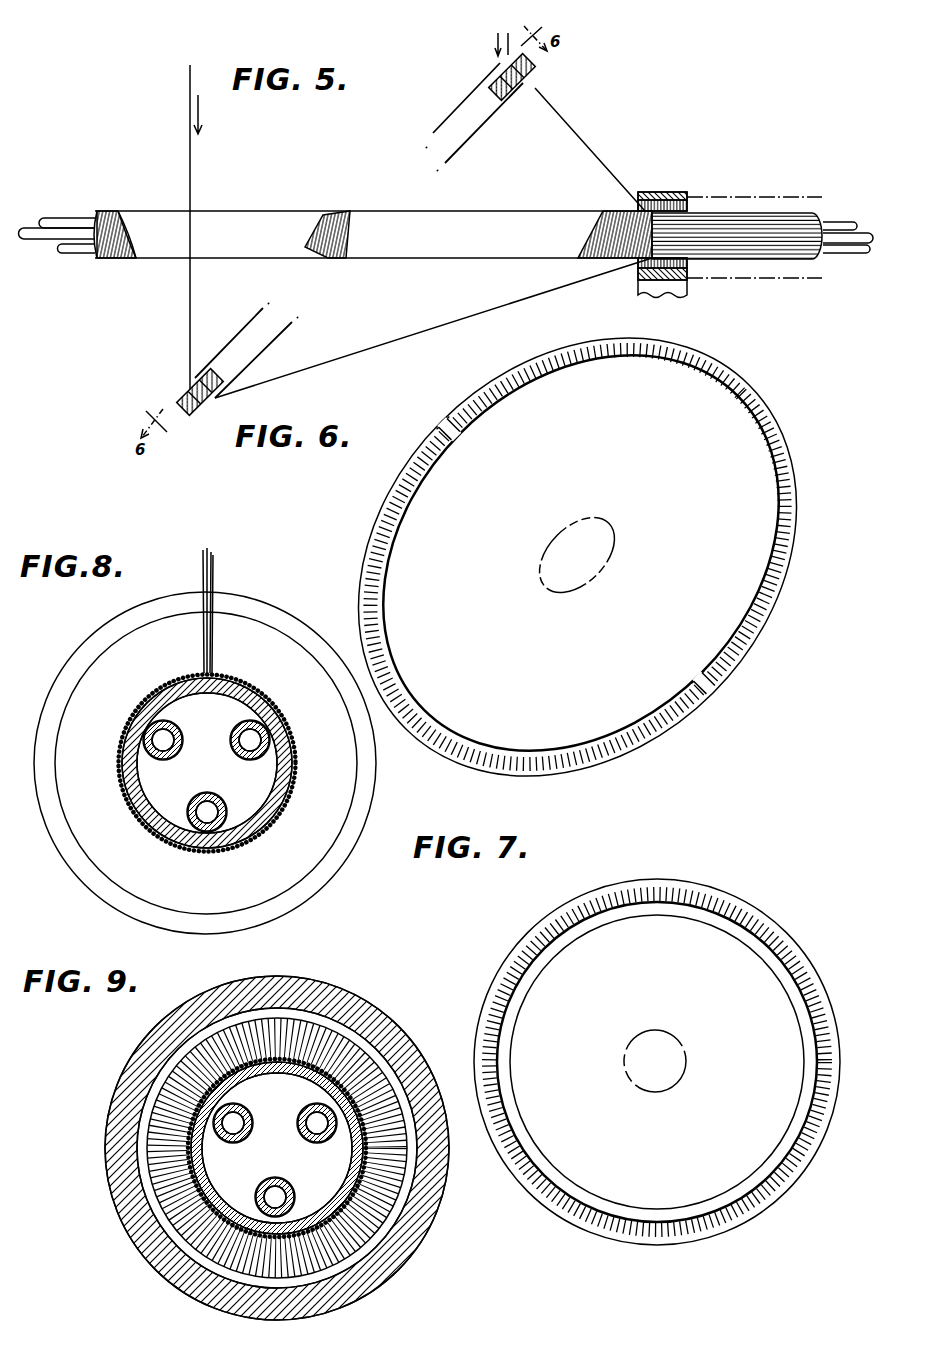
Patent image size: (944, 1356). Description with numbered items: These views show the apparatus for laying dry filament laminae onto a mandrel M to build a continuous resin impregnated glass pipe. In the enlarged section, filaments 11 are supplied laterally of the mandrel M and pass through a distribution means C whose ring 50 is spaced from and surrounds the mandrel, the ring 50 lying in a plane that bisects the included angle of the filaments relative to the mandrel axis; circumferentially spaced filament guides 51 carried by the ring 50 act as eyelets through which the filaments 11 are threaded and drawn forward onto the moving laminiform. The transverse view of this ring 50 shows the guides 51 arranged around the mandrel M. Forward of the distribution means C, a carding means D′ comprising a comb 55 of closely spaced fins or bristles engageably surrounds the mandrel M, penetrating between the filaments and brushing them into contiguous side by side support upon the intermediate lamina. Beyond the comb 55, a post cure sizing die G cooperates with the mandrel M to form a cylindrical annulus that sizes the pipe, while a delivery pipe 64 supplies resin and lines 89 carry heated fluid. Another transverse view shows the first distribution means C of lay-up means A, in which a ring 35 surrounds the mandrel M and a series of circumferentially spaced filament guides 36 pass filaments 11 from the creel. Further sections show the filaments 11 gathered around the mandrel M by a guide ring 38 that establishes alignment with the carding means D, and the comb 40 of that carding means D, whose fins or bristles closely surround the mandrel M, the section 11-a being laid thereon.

In FIG. 5, the filament 11 is at (191, 166).
In FIG. 8, the filament 11 is at (214, 566).
In FIG. 5, the lines 89 is at (74, 218).
In FIG. 5, the delivery pipe 64 is at (64, 258).
In FIG. 8, the delivery pipe 64 is at (204, 800).
In FIG. 9, the delivery pipe 64 is at (274, 1185).
In FIG. 5, the mandrel M is at (100, 262).
In FIG. 6, the mandrel M is at (620, 562).
In FIG. 7, the mandrel M is at (678, 1034).
In FIG. 8, the mandrel M is at (268, 774).
In FIG. 9, the mandrel M is at (334, 1166).
In FIG. 5, the distribution means C is at (543, 84).
In FIG. 6, the distribution means C is at (781, 405).
In FIG. 7, the distribution means C is at (758, 900).
In FIG. 5, the ring 50 is at (185, 392).
In FIG. 6, the ring 50 is at (796, 505).
In FIG. 6, the filament guides 51 is at (548, 382).
In FIG. 5, the carding means D′ is at (703, 201).
In FIG. 5, the comb 55 is at (690, 270).
In FIG. 5, the post cure sizing die G is at (818, 200).
In FIG. 7, the lay-up means A is at (529, 914).
In FIG. 8, the lay-up means A is at (88, 623).
In FIG. 9, the lay-up means A is at (133, 1035).
In FIG. 7, the filament guides 36 is at (672, 890).
In FIG. 7, the ring 35 is at (660, 905).
In FIG. 8, the guide ring 38 is at (290, 652).
In FIG. 9, the carding means D is at (356, 1023).
In FIG. 9, the comb 40 is at (330, 1052).
In FIG. 9, the inner sheath 11-a is at (276, 1062).